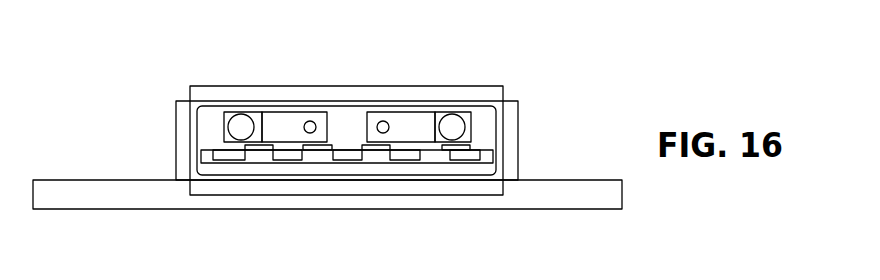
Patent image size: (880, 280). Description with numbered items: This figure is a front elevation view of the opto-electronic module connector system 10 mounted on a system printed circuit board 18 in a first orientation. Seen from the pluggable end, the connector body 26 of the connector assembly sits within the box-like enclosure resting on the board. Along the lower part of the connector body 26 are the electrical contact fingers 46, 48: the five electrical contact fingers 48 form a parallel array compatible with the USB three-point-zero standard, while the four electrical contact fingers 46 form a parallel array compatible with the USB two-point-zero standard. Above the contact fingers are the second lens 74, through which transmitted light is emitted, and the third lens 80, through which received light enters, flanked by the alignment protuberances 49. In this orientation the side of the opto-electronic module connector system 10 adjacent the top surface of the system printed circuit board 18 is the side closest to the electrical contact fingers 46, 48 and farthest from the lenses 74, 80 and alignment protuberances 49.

The opto-electronic module connector system 10 is at (348, 57).
The system printed circuit board 18 is at (63, 179).
The connector body 26 is at (500, 158).
The electrical contact fingers 46 is at (250, 157).
The electrical contact fingers 48 is at (225, 160).
The alignment protuberances 49 is at (238, 131).
The second lens 74 is at (312, 108).
The third lens 80 is at (382, 108).